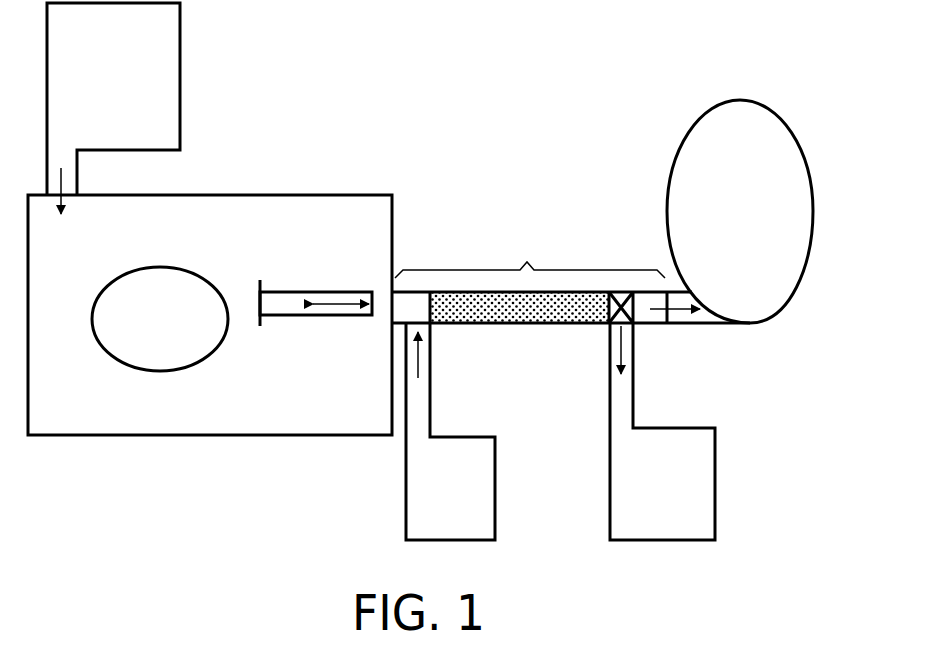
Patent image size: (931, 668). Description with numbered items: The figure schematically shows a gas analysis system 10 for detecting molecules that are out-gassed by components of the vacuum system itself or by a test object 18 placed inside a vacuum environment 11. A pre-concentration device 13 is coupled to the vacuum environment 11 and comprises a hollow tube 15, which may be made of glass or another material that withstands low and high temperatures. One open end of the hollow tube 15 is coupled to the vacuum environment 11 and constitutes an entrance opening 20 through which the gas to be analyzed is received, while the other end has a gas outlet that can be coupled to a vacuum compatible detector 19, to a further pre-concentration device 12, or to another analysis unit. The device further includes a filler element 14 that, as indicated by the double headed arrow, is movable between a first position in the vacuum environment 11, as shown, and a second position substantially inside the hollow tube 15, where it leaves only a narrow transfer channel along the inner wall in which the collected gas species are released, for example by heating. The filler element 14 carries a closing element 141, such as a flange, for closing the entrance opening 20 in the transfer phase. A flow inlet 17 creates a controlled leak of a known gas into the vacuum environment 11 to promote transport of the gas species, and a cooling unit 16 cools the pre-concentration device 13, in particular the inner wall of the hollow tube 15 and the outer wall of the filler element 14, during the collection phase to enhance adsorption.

The gas analysis system 10 is at (546, 84).
The vacuum environment 11 is at (265, 194).
The further (pre-) concentration device 12 is at (740, 211).
The pre-concentration device 13 is at (530, 255).
The filler element 14 is at (287, 318).
The closing element 141 is at (258, 299).
The hollow tube 15 is at (513, 326).
The cooling unit 16 is at (450, 431).
The flow inlet 17 is at (113, 108).
The object 18 is at (160, 319).
The vacuum compatible detector 19 is at (662, 431).
The entrance opening 20 is at (389, 300).